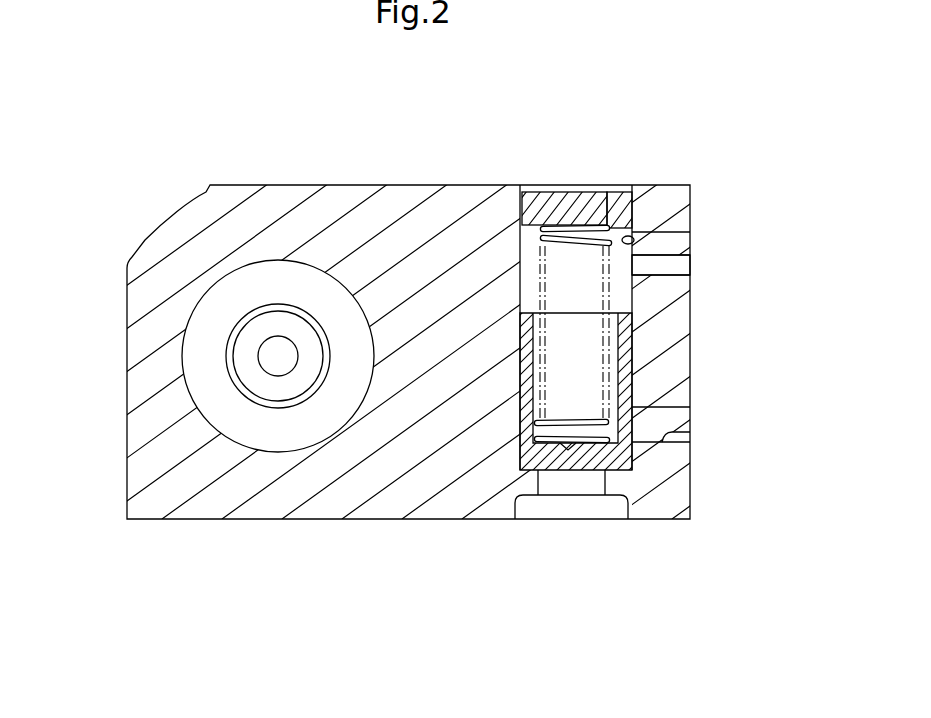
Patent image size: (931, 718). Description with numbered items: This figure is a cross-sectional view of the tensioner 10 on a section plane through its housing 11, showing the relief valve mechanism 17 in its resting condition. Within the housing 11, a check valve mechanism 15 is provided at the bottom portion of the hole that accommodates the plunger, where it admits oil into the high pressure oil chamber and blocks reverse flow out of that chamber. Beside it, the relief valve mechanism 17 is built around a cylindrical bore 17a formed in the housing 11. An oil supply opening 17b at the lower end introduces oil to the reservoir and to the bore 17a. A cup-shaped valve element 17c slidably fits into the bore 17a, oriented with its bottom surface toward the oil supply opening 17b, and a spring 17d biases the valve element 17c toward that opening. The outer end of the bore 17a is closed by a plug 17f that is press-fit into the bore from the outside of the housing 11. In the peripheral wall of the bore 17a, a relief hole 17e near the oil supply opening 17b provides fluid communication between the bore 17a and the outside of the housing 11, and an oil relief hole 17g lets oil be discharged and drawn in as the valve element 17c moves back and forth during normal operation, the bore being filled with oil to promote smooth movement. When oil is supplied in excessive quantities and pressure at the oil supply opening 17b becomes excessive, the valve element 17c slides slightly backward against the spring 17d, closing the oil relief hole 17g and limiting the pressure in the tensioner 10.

The tensioner 10 is at (668, 163).
The housing 11 is at (357, 193).
The check valve mechanism 15 is at (217, 352).
The relief valve mechanism 17 is at (566, 372).
The cylindrical bore 17a is at (636, 234).
The oil supply opening 17b is at (568, 512).
The cup-shaped valve element 17c is at (628, 372).
The spring 17d is at (605, 197).
The relief hole 17e is at (672, 432).
The plug 17f is at (545, 198).
The oil relief hole 17g is at (672, 268).